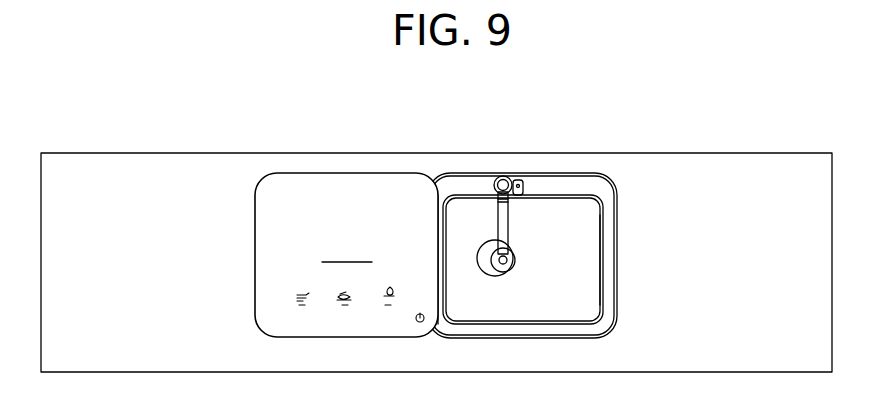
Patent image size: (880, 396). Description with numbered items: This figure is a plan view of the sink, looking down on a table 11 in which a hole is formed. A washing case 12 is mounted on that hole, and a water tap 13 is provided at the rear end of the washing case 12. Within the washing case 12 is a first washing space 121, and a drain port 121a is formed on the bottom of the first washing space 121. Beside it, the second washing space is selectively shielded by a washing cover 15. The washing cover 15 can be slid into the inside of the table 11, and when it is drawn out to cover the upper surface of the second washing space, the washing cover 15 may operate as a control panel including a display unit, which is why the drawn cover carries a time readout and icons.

The table 11 is at (668, 160).
The washing case 12 is at (607, 255).
The first washing space 121 is at (575, 245).
The drain port 121a is at (488, 258).
The water tap 13 is at (505, 222).
The washing cover 15 is at (321, 182).